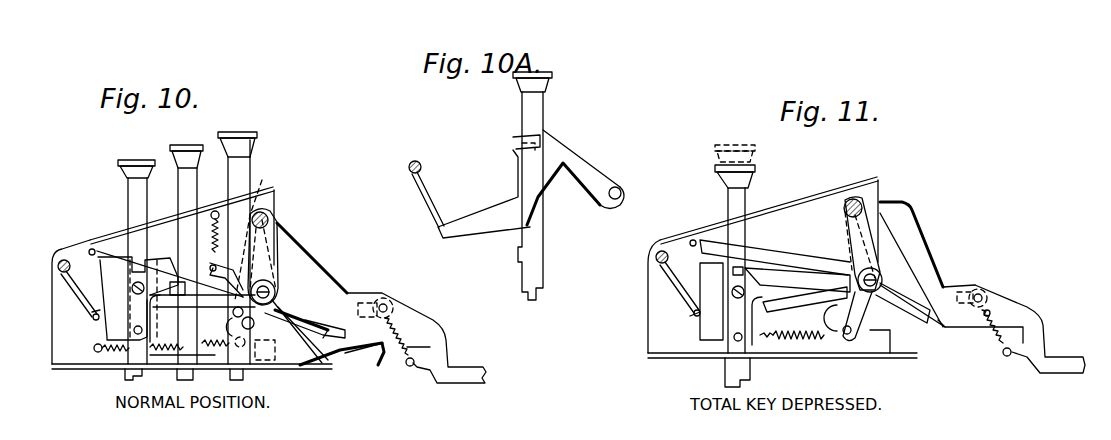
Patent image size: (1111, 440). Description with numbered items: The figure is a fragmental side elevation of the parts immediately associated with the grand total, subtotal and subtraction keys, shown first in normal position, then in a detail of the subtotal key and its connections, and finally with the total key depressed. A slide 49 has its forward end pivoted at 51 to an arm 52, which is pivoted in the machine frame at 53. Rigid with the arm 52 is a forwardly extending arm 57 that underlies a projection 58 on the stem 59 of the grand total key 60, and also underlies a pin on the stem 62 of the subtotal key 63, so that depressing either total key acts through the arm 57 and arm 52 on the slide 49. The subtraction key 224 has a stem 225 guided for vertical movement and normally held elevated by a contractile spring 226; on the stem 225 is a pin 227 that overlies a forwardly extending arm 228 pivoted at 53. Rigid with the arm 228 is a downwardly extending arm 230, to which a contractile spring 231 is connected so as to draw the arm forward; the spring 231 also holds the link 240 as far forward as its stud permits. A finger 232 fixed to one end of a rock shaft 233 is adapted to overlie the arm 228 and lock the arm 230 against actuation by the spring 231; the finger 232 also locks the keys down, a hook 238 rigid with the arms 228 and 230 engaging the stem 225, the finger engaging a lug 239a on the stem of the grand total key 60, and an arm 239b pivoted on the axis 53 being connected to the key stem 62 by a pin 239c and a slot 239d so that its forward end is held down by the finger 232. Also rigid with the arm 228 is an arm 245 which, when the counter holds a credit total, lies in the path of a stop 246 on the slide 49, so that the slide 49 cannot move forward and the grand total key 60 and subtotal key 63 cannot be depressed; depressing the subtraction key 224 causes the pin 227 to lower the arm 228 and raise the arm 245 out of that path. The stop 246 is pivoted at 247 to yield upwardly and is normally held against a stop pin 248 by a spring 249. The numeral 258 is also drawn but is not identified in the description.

In FIG. 10, the slide 49 is at (440, 320).
In FIG. 11, the slide 49 is at (1045, 323).
In FIG. 11, the pivot 51 is at (853, 199).
In FIG. 10, the arm 52 is at (268, 237).
In FIG. 11, the arm 52 is at (848, 225).
In FIG. 10, the pivot 53 is at (268, 296).
In FIG. 10A, the pivot 53 is at (620, 190).
In FIG. 11, the pivot 53 is at (690, 168).
In FIG. 10, the forwardly extending arm 57 is at (204, 358).
In FIG. 11, the forwardly extending arm 57 is at (783, 307).
In FIG. 10, the projection 58 is at (173, 303).
In FIG. 11, the projection 58 is at (792, 287).
In FIG. 10, the stem 59 is at (128, 207).
In FIG. 10, the grand total key 60 is at (130, 162).
In FIG. 11, the grand total key 60 is at (757, 168).
In FIG. 10A, the stem 62 is at (533, 112).
In FIG. 10, the subtotal key 63 is at (178, 152).
In FIG. 10A, the subtotal key 63 is at (543, 80).
In FIG. 10, the subtraction key 224 is at (230, 132).
In FIG. 10, the stem 225 is at (250, 153).
In FIG. 10, the contractile spring 226 is at (214, 211).
In FIG. 10, the pin 227 is at (262, 180).
In FIG. 10, the forwardly extending arm 228 is at (165, 233).
In FIG. 11, the forwardly extending arm 228 is at (773, 257).
In FIG. 10, the downwardly extending arm 230 is at (267, 312).
In FIG. 11, the downwardly extending arm 230 is at (850, 340).
In FIG. 10, the contractile spring 231 is at (162, 355).
In FIG. 11, the contractile spring 231 is at (800, 340).
In FIG. 10, the finger 232 is at (95, 307).
In FIG. 10A, the finger 232 is at (434, 187).
In FIG. 11, the finger 232 is at (690, 305).
In FIG. 10, the rock shaft 233 is at (60, 268).
In FIG. 11, the hook 238 is at (880, 233).
In FIG. 10, the lug 239a is at (98, 312).
In FIG. 11, the lug 239a is at (697, 312).
In FIG. 10A, the arm 239b is at (487, 218).
In FIG. 10A, the pin 239c is at (522, 145).
In FIG. 10A, the slot 239d is at (540, 167).
In FIG. 10, the link 240 is at (383, 377).
In FIG. 10, the arm 245 is at (295, 293).
In FIG. 11, the arm 245 is at (903, 295).
In FIG. 10, the stop 246 is at (378, 300).
In FIG. 11, the stop 246 is at (958, 290).
In FIG. 11, the pivot 247 is at (987, 298).
In FIG. 11, the stop pin 248 is at (990, 315).
In FIG. 10, the spring 249 is at (430, 347).
In FIG. 11, the spring 249 is at (1003, 350).
In FIG. 11, the lever 258 is at (936, 428).